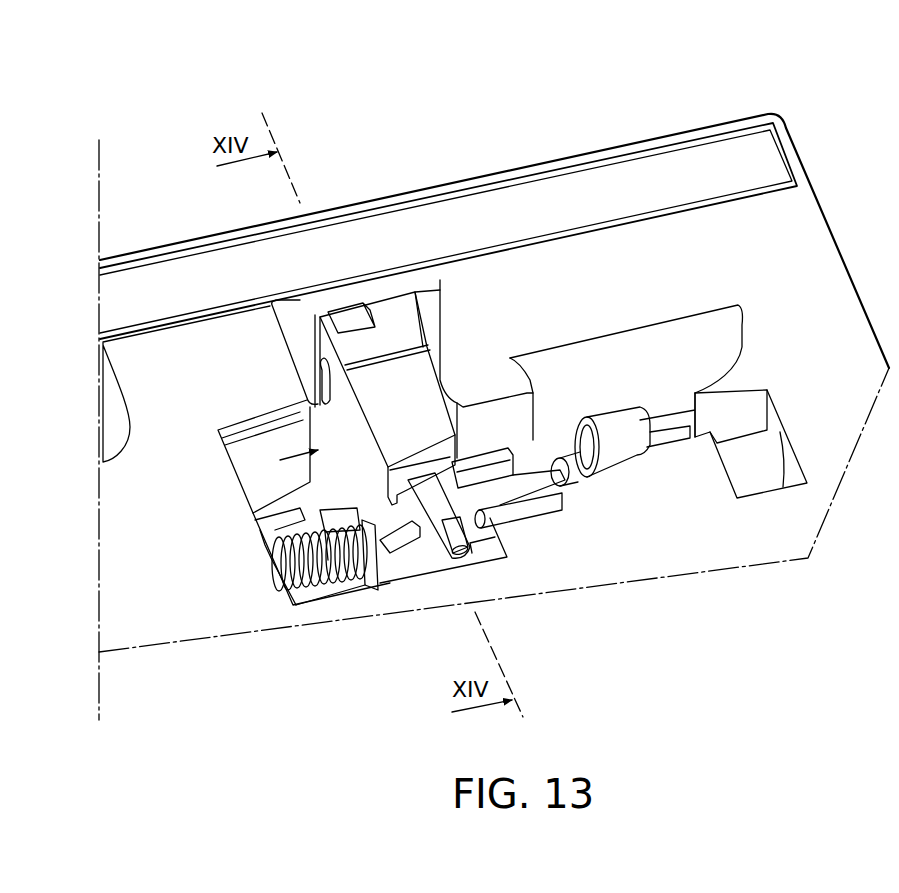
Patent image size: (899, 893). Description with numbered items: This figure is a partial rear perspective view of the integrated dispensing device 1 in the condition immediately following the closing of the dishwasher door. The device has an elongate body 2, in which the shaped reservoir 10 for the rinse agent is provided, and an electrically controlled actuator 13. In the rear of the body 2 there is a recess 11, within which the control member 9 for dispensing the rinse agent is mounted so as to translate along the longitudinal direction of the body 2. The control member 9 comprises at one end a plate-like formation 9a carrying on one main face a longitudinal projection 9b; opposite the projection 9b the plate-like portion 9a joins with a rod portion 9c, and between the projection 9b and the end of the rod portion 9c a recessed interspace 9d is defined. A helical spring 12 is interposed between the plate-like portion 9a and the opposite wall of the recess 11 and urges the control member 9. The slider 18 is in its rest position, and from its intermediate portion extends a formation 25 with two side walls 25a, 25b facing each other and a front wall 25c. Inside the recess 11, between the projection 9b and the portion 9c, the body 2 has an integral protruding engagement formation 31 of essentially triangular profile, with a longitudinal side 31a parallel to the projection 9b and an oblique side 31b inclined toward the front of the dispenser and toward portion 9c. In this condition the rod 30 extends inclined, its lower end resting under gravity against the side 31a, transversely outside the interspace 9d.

The integrated dispensing device 1 is at (447, 178).
The elongate body 2 is at (692, 127).
The control member 9 is at (543, 478).
The plate-like formation 9a is at (418, 570).
The longitudinal projection 9b is at (372, 580).
The rod portion 9c is at (527, 507).
The recessed interspace 9d is at (473, 493).
The reservoir 10 is at (817, 435).
The recess 11 is at (262, 452).
The helical spring 12 is at (312, 528).
The electrically controlled actuator 13 is at (520, 172).
The slider 18 is at (303, 332).
The formation 25 is at (268, 515).
The side wall 25a is at (350, 395).
The side wall 25b is at (337, 580).
The front wall 25c is at (400, 390).
The rod 30 is at (427, 537).
The engagement formation 31 is at (485, 547).
The longitudinal side 31a is at (500, 533).
The oblique side 31b is at (480, 555).